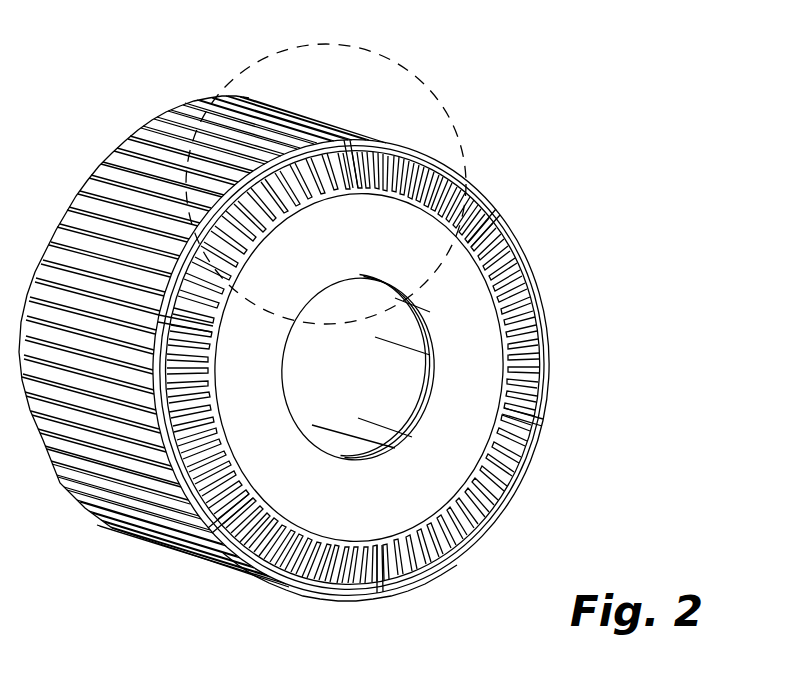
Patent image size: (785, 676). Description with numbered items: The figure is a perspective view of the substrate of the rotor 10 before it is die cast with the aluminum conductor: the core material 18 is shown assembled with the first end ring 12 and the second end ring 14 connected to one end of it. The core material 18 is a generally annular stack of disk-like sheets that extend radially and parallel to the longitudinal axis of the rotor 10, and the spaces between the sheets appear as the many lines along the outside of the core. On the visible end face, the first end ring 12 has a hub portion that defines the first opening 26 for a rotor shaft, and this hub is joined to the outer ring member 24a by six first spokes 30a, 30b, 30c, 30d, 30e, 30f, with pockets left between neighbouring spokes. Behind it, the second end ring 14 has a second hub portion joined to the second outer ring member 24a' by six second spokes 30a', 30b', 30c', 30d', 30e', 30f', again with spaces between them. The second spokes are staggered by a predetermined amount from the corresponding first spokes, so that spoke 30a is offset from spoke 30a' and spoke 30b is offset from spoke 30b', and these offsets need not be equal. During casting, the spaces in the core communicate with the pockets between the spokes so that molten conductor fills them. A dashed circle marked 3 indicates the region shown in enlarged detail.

The rotor 10 is at (557, 108).
The first end ring 12 is at (262, 166).
The second end ring 14 is at (292, 158).
The core material 18 is at (107, 153).
The detail region of FIG. 3 is at (429, 79).
The outer ring member 24a is at (200, 588).
The second outer ring member 24a' is at (340, 600).
The first opening 26 is at (395, 402).
The first spoke 30a is at (542, 319).
The first spoke 30b is at (420, 197).
The first spoke 30c is at (261, 238).
The first spoke 30d is at (221, 422).
The first spoke 30e is at (300, 530).
The first spoke 30f is at (463, 497).
The second spoke 30a' is at (560, 409).
The second spoke 30b' is at (537, 233).
The second spoke 30c' is at (383, 139).
The second spoke 30d' is at (223, 338).
The second spoke 30e' is at (254, 480).
The second spoke 30f' is at (397, 534).